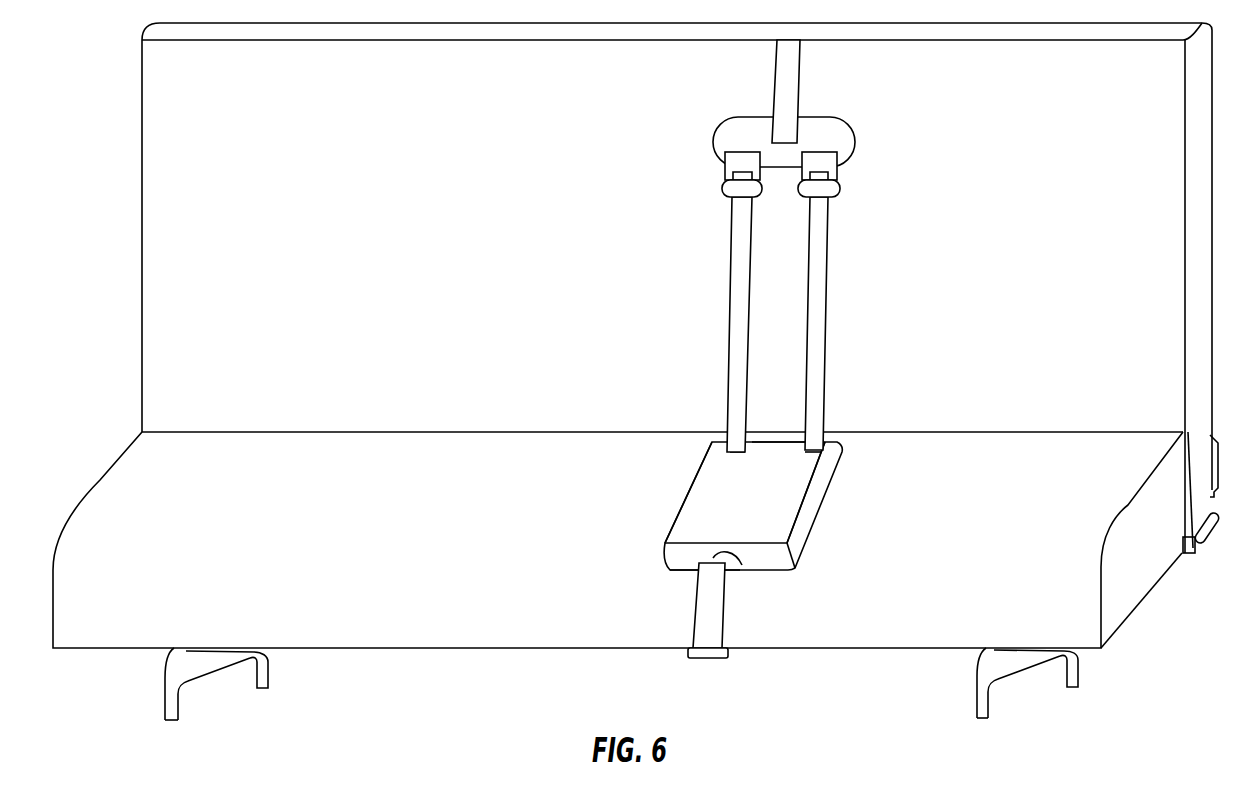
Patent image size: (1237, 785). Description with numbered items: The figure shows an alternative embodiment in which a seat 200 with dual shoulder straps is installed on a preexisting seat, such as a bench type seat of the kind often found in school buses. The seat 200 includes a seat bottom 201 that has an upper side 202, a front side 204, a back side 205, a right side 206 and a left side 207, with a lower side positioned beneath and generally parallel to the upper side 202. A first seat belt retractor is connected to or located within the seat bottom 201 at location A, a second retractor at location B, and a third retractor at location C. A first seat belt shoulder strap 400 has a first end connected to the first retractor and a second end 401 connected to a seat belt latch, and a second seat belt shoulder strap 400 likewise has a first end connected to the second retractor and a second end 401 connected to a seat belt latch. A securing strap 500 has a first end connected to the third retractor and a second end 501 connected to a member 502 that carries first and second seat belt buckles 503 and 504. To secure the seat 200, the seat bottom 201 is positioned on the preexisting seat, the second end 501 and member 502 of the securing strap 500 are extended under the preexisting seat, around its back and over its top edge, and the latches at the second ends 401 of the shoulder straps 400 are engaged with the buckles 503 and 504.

The seat 200 is at (676, 361).
The seat bottom 201 is at (858, 495).
The upper side 202 is at (768, 511).
The front side 204 is at (680, 567).
The back side 205 is at (773, 440).
The right side 206 is at (805, 528).
The left side 207 is at (676, 515).
The seat belt shoulder strap 400 is at (738, 307).
The second end 401 is at (722, 178).
The securing strap 500 is at (697, 621).
The second end 501 is at (786, 122).
The member 502 is at (787, 110).
The first seat belt buckle 503 is at (743, 165).
The second seat belt buckle 504 is at (818, 165).
The location A is at (733, 453).
The location B is at (815, 452).
The location C is at (742, 565).